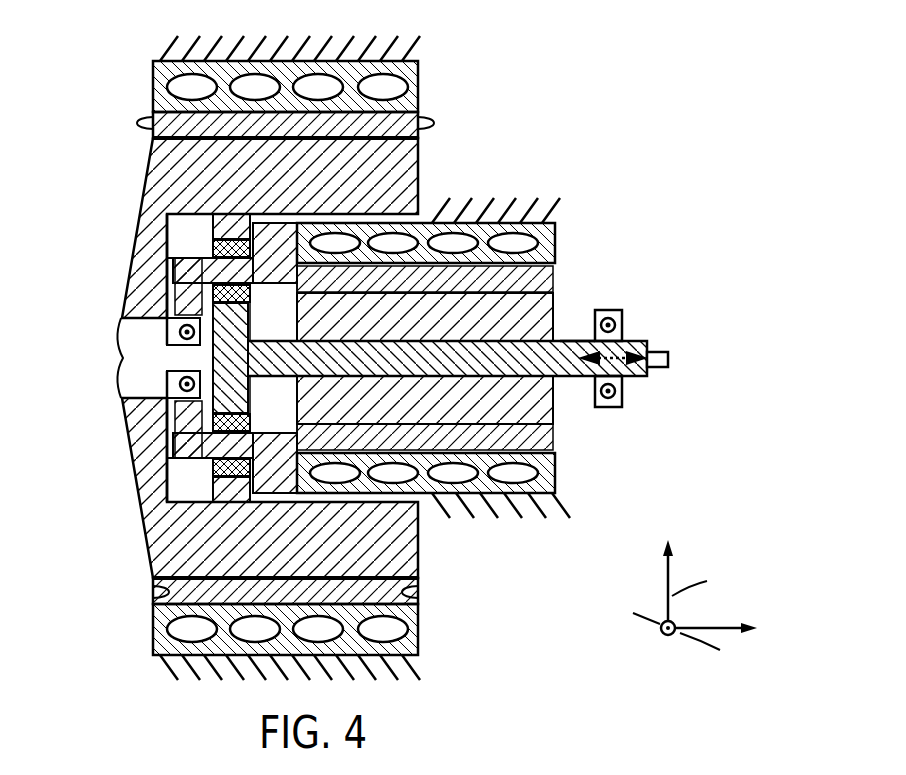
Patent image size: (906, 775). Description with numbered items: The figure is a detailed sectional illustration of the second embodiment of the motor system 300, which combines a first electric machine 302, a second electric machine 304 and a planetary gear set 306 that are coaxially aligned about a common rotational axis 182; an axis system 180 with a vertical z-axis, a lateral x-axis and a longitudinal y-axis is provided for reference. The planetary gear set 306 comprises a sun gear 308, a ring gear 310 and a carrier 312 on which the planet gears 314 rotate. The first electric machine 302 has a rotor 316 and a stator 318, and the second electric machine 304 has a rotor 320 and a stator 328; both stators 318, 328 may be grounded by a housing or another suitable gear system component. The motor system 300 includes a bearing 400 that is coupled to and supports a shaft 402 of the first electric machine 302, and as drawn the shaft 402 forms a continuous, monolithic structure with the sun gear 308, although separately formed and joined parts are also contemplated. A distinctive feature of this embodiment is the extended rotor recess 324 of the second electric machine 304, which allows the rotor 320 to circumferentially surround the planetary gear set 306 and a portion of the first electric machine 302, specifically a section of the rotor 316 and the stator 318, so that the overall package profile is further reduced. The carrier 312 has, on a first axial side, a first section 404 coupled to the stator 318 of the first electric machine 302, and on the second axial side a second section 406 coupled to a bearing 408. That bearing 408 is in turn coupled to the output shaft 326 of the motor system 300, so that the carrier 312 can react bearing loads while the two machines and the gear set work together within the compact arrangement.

The motor system 300 is at (714, 55).
The first electric machine 302 is at (675, 214).
The second electric machine 304 is at (78, 64).
The planetary gear set 306 is at (180, 227).
The sun gear 308 is at (239, 388).
The ring gear 310 is at (223, 495).
The carrier 312 is at (200, 247).
The planet gears 314 is at (243, 291).
The rotor 316 is at (549, 404).
The stator 318 is at (553, 232).
The rotor 320 is at (130, 159).
The extended rotor recess 324 is at (424, 506).
The output shaft 326 is at (133, 372).
The stator 328 is at (160, 98).
The bearing 400 is at (608, 311).
The shaft 402 is at (577, 343).
The first section 404 is at (281, 246).
The second section 406 is at (186, 283).
The bearing 408 is at (178, 342).
The axis system 180 is at (745, 583).
The rotational axis 182 is at (611, 360).